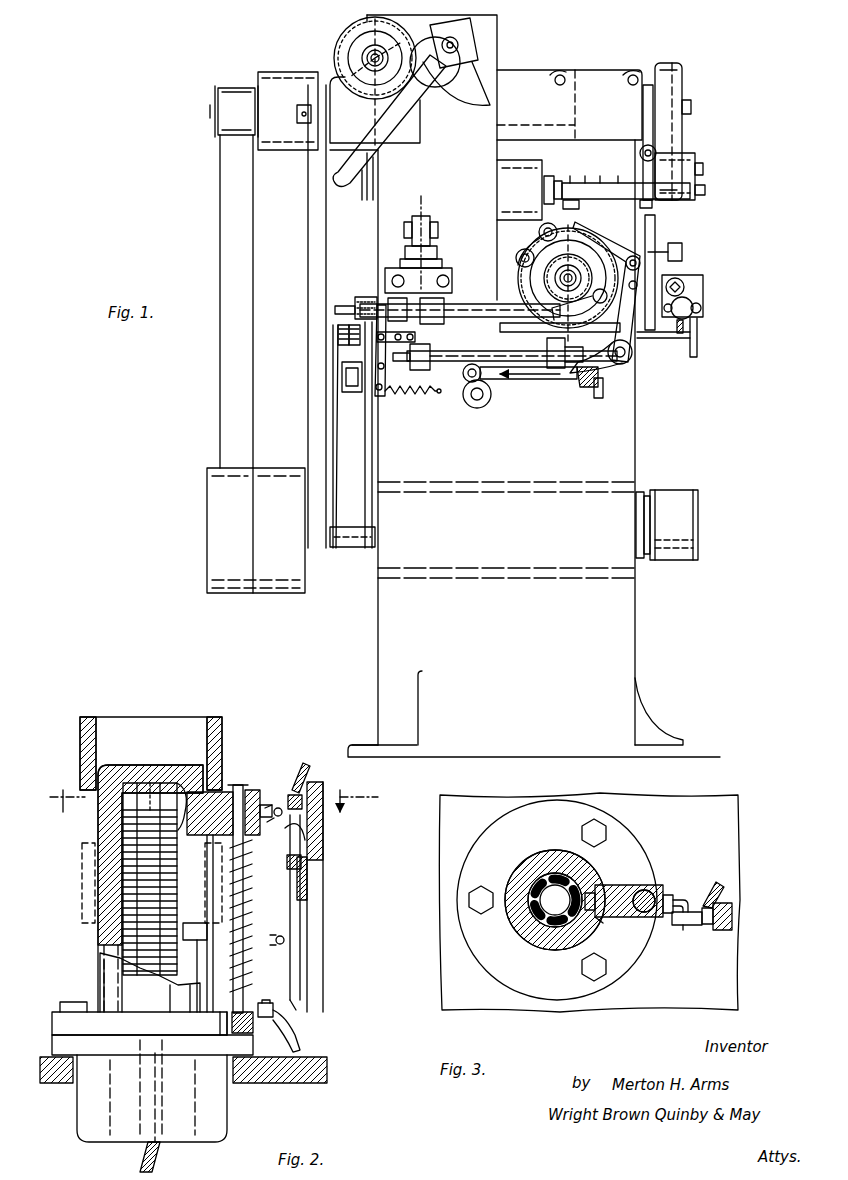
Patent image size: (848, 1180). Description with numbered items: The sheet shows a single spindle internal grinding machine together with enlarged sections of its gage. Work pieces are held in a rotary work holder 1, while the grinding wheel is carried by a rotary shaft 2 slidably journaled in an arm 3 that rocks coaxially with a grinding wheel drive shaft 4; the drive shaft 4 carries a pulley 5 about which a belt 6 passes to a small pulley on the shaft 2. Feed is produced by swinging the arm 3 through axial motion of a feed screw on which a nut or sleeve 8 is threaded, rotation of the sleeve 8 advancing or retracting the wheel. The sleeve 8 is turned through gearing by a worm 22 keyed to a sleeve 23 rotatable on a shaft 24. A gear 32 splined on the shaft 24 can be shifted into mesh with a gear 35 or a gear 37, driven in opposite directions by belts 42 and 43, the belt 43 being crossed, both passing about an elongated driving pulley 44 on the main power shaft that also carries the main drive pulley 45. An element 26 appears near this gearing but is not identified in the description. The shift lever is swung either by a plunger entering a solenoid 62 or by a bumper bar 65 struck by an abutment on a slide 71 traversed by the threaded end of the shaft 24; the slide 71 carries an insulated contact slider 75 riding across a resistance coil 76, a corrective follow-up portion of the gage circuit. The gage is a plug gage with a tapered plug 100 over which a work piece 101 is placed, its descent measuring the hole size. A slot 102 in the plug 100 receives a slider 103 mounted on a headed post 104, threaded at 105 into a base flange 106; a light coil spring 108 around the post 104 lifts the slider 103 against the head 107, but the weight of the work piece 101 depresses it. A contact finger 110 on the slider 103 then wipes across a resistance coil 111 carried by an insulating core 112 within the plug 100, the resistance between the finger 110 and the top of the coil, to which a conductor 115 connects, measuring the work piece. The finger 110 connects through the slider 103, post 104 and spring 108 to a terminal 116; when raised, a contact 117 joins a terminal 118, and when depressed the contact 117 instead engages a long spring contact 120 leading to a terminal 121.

In FIG. 1, the rotary work holder 1 is at (500, 182).
In FIG. 1, the rotary shaft 2 is at (552, 178).
In FIG. 1, the arm 3 is at (606, 86).
In FIG. 2, the arm 3 is at (214, 817).
In FIG. 1, the grinding wheel drive shaft 4 is at (692, 108).
In FIG. 1, the pulley 5 is at (683, 78).
In FIG. 1, the belt 6 is at (672, 168).
In FIG. 1, the nut or sleeve 8 is at (383, 281).
In FIG. 1, the worm 22 is at (552, 340).
In FIG. 1, the sleeve 23 is at (467, 302).
In FIG. 1, the shaft 24 is at (498, 307).
In FIG. 1, the gear 26 is at (538, 246).
In FIG. 1, the gear 32 is at (355, 303).
In FIG. 1, the gear 35 is at (356, 342).
In FIG. 1, the gear 37 is at (345, 337).
In FIG. 1, the belt 42 is at (369, 455).
In FIG. 1, the belt 43 is at (334, 462).
In FIG. 1, the elongated driving pulley 44 is at (350, 546).
In FIG. 1, the main drive pulley 45 is at (669, 508).
In FIG. 1, the solenoid 62 is at (350, 378).
In FIG. 1, the bumper bar 65 is at (456, 365).
In FIG. 1, the slide 71 is at (596, 332).
In FIG. 1, the contact slider 75 is at (610, 372).
In FIG. 1, the resistance coil 76 is at (598, 386).
In FIG. 1, the tapered plug 100 is at (432, 234).
In FIG. 2, the tapered plug 100 is at (112, 760).
In FIG. 3, the tapered plug 100 is at (565, 942).
In FIG. 1, the work piece 101 is at (438, 244).
In FIG. 2, the work piece 101 is at (212, 712).
In FIG. 3, the slot 102 is at (598, 890).
In FIG. 2, the slider 103 is at (220, 790).
In FIG. 3, the slider 103 is at (630, 893).
In FIG. 2, the headed post 104 is at (260, 800).
In FIG. 3, the headed post 104 is at (650, 912).
In FIG. 2, the threaded lower end 105 is at (253, 1030).
In FIG. 2, the base flange 106 is at (97, 1022).
In FIG. 3, the base flange 106 is at (500, 972).
In FIG. 2, the head 107 is at (245, 792).
In FIG. 2, the light coil spring 108 is at (250, 858).
In FIG. 3, the light coil spring 108 is at (652, 910).
In FIG. 2, the electrical contact finger 110 is at (188, 765).
In FIG. 3, the electrical contact finger 110 is at (600, 925).
In FIG. 2, the resistance coil 111 is at (138, 780).
In FIG. 3, the resistance coil 111 is at (545, 880).
In FIG. 2, the insulating core 112 is at (152, 780).
In FIG. 3, the insulating core 112 is at (550, 876).
In FIG. 2, the conductor 115 is at (160, 1160).
In FIG. 2, the terminal 116 is at (290, 1002).
In FIG. 2, the contact 117 is at (278, 820).
In FIG. 3, the contact 117 is at (688, 898).
In FIG. 2, the terminal 118 is at (304, 762).
In FIG. 3, the terminal 118 is at (707, 930).
In FIG. 2, the long spring contact 120 is at (292, 922).
In FIG. 2, the terminal 121 is at (304, 846).